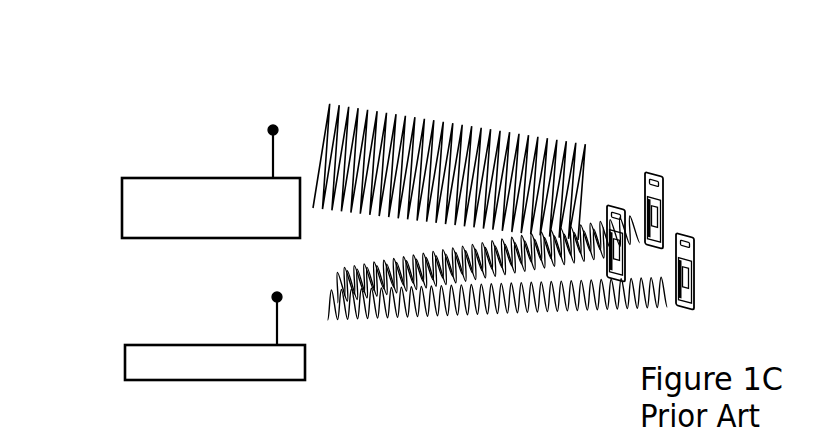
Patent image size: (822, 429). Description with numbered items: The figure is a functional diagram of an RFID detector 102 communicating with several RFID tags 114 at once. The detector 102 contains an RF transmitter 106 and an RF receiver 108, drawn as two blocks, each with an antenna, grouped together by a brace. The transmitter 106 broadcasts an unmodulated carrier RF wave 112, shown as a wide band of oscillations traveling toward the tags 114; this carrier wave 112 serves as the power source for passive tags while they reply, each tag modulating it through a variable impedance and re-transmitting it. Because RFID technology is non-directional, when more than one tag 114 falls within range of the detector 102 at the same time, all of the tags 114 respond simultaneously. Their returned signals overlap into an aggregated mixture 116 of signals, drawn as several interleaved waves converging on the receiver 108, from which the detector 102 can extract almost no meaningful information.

The RFID detector 102 is at (88, 112).
The RF transmitter 106 is at (163, 177).
The RF receiver 108 is at (163, 344).
The carrier RF wave 112 is at (437, 80).
The RFID tags 114 is at (708, 165).
The aggregated mixture of signals 116 is at (438, 355).